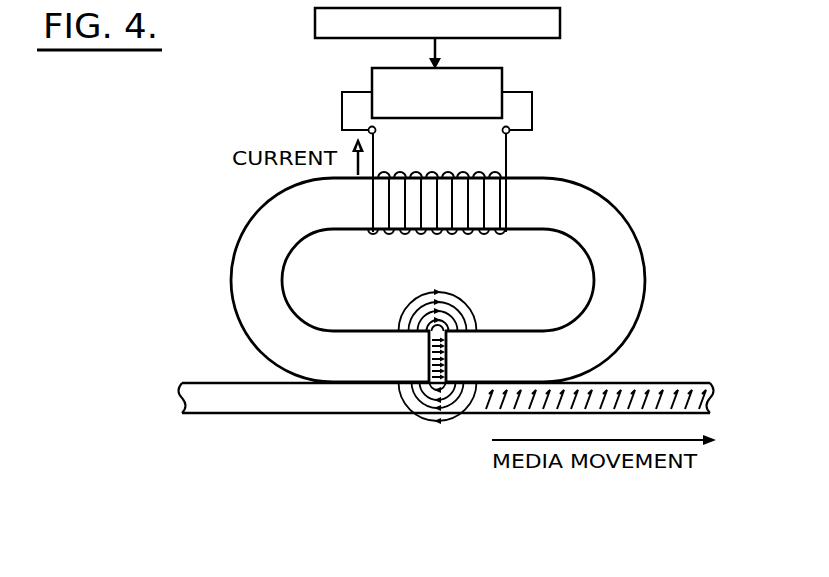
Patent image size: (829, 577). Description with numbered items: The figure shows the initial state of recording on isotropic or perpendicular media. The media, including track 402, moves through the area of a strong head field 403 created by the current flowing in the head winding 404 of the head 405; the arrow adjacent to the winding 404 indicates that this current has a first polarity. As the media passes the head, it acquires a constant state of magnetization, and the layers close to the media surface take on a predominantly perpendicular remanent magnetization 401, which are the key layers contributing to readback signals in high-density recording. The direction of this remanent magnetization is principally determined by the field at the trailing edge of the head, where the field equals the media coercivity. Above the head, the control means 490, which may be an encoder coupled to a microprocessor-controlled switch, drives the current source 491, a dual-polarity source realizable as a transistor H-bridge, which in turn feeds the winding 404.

The perpendicular remanent magnetization 401 is at (663, 376).
The track 402 is at (270, 415).
The head field 403 is at (421, 431).
The head winding 404 is at (432, 172).
The head 405 is at (615, 205).
The control means 490 is at (560, 23).
The current source 491 is at (503, 75).